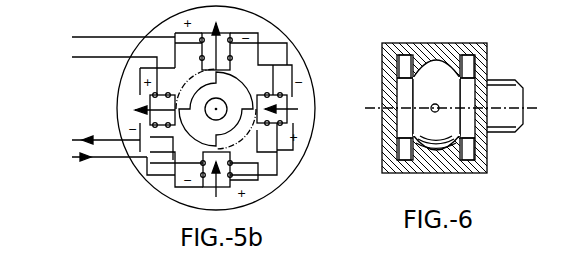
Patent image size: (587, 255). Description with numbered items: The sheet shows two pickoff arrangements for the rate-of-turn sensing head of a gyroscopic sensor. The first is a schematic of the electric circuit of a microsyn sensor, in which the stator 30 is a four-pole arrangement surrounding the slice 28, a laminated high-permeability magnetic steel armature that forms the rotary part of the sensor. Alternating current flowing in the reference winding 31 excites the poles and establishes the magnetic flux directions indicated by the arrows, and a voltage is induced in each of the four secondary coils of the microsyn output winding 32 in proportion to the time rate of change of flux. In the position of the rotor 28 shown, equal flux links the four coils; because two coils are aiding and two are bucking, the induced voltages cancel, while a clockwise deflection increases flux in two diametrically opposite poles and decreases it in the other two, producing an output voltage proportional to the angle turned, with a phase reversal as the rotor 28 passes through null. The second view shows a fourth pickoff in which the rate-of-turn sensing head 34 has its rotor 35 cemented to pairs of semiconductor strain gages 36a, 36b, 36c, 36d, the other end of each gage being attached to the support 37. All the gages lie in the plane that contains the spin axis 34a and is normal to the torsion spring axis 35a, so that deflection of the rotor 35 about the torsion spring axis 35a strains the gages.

In FIG. 5B, the slice 28 is at (243, 98).
In FIG. 5B, the stator 30 is at (289, 168).
In FIG. 5B, the reference winding 31 is at (82, 159).
In FIG. 5B, the microsyn output winding 32 is at (117, 37).
In FIG. 6, the rate-of-turn sensing head 34 is at (419, 107).
In FIG. 6, the spin axis 34a is at (522, 113).
In FIG. 6, the rotor 35 is at (442, 140).
In FIG. 6, the torsion spring axis 35a is at (431, 109).
In FIG. 6, the semiconductor strain gage 36a is at (404, 60).
In FIG. 6, the semiconductor strain gage 36b is at (467, 60).
In FIG. 6, the semiconductor strain gage 36c is at (402, 160).
In FIG. 6, the semiconductor strain gage 36d is at (467, 160).
In FIG. 6, the support 37 is at (483, 64).